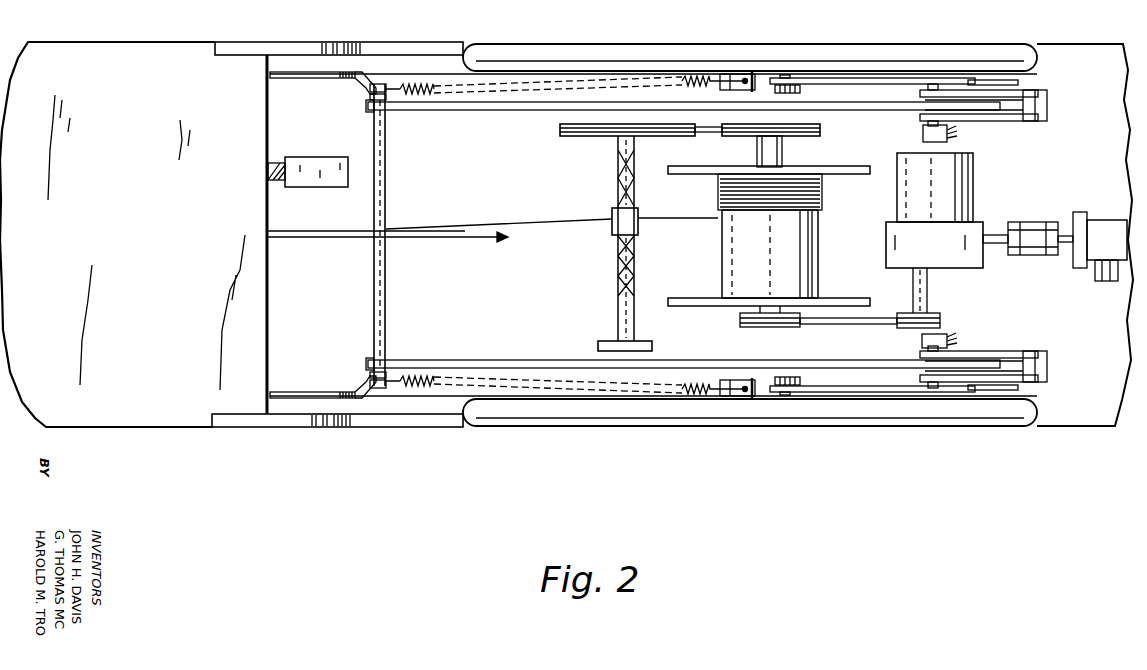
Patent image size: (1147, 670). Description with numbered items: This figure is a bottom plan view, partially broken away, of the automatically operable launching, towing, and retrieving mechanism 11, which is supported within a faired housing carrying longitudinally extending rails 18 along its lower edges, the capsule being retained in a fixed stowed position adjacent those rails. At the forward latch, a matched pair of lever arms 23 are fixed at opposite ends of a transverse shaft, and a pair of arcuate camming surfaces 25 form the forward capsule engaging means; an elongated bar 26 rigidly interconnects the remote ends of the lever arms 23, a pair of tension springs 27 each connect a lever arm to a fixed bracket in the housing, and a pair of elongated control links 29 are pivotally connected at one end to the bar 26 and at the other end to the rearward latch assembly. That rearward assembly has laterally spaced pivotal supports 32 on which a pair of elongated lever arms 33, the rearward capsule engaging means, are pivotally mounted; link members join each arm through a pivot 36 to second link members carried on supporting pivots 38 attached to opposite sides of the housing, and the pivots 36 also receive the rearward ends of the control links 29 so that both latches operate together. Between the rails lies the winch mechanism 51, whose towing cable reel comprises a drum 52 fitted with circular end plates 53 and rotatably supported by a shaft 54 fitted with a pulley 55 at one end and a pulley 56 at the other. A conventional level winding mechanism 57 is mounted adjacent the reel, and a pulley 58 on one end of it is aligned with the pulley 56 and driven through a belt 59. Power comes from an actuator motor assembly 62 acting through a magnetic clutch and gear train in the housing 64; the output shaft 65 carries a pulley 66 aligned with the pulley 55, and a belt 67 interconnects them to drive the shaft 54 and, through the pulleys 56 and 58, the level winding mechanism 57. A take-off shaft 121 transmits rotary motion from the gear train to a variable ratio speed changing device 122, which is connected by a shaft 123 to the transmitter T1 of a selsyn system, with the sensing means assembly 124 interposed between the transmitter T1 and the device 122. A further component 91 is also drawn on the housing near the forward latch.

The launching, towing, and retrieving mechanism 11 is at (274, 431).
The longitudinally extending rails 18 is at (834, 48).
The lever arms 23 is at (318, 80).
The arcuate camming surfaces 25 is at (432, 42).
The elongated bar 26 is at (386, 180).
The tension springs 27 is at (450, 80).
The control links 29 is at (492, 110).
The pivotal supports 32 is at (800, 91).
The elongated lever arms 33 is at (1018, 82).
The pivot 36 is at (1040, 121).
The supporting pivots 38 is at (923, 134).
The winch mechanism 51 is at (712, 307).
The drum 52 is at (796, 266).
The circular end plates 53 is at (862, 298).
The shaft 54 is at (758, 136).
The pulley 55 is at (781, 328).
The pulley 56 is at (812, 137).
The level winding mechanism 57 is at (616, 166).
The pulley 58 is at (560, 137).
The belt 59 is at (702, 134).
The actuator motor assembly 62 is at (945, 200).
The housing 64 is at (925, 247).
The output shaft 65 is at (928, 288).
The pulley 66 is at (908, 329).
The belt 67 is at (818, 325).
The connector 91 is at (322, 187).
The take-off shaft 121 is at (997, 247).
The variable ratio speed changing device 122 is at (1035, 256).
The shaft 123 is at (1065, 236).
The sensing means assembly 124 is at (1078, 268).
The transmitter T1 is at (1110, 220).